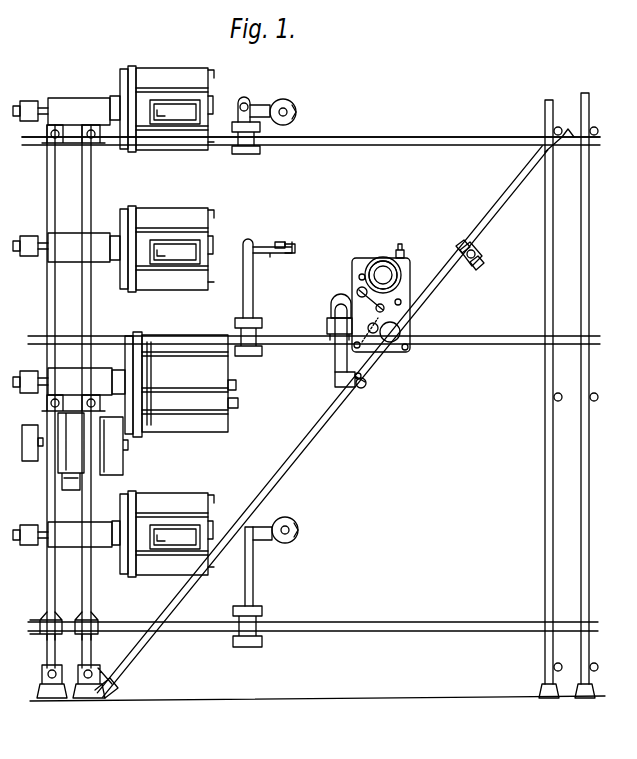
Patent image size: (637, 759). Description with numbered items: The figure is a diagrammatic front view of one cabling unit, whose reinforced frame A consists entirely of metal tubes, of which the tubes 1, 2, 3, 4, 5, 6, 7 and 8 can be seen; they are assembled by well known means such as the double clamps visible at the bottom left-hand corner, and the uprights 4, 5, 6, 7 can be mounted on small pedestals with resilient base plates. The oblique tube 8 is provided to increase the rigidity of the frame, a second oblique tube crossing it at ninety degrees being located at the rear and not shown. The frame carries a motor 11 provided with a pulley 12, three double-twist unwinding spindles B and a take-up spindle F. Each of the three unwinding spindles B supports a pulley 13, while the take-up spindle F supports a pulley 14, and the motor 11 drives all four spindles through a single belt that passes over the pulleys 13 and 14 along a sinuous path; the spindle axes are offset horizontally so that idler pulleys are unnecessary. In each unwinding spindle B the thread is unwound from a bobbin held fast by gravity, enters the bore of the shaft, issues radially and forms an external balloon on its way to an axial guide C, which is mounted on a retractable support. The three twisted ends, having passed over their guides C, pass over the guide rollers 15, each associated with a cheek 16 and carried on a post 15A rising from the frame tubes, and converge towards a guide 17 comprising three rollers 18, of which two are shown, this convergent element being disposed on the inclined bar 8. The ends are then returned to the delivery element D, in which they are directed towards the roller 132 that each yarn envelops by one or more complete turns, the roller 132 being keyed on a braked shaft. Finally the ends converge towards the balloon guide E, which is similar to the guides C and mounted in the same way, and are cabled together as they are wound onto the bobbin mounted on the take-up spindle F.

The tube 1 is at (389, 145).
The tube 2 is at (474, 340).
The tube 3 is at (455, 622).
The upright 4 is at (50, 588).
The upright 5 is at (87, 608).
The upright 6 is at (545, 433).
The upright 7 is at (585, 472).
The oblique tube 8 is at (478, 238).
The motor 11 is at (72, 450).
The pulley 12 is at (30, 462).
The pulley 13 is at (25, 102).
The pulley 14 is at (27, 372).
The guide roller 15 is at (285, 108).
The roller support post 15A is at (243, 100).
The cheek 16 is at (296, 112).
The guide 17 is at (483, 257).
The rollers 18 is at (478, 250).
The roller 132 is at (387, 260).
The frame A is at (340, 152).
The double-twist unwinding spindle B is at (68, 100).
The guide C is at (266, 110).
The delivery element D is at (355, 262).
The guide E is at (335, 378).
The double twist winding-on spindle F is at (64, 370).